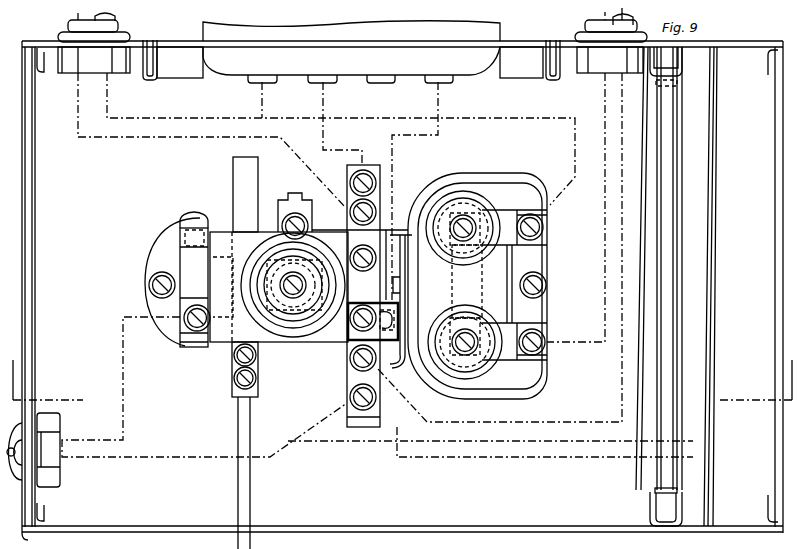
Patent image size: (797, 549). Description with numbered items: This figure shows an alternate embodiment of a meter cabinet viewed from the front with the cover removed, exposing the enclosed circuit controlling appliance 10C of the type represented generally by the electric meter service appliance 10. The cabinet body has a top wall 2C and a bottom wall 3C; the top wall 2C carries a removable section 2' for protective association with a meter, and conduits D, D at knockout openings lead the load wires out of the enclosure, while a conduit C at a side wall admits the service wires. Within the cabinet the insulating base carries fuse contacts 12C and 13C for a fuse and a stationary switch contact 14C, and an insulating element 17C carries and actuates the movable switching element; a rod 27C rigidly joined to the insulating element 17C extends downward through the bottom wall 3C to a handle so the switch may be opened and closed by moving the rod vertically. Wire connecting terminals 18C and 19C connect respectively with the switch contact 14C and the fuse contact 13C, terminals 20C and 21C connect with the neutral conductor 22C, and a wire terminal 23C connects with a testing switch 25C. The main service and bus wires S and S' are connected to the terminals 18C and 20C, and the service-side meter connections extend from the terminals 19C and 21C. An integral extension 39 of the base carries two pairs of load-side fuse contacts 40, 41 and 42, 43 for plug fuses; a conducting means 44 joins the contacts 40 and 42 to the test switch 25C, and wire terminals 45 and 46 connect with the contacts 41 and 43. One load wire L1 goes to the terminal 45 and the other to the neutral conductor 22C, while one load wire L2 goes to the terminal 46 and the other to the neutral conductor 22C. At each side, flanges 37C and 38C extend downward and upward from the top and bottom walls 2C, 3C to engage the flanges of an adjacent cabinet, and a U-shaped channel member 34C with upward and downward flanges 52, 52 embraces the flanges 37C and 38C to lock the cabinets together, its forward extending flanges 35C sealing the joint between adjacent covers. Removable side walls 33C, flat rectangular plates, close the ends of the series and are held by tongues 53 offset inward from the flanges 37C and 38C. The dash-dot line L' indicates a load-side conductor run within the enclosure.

The top wall 2C is at (43, 43).
The conduit D is at (113, 23).
The removable section 2' is at (351, 45).
The load wire L1 is at (580, 36).
The flange 52 is at (678, 63).
The flange 37C is at (22, 78).
The tongue 53 is at (43, 72).
The load wire L2 is at (164, 137).
The line conductor L' is at (499, 247).
The insulating element 17C is at (233, 163).
The wire connecting terminal 21C is at (370, 164).
The fuse contact 42 is at (462, 226).
The fuse contact 43 is at (468, 197).
The integral extension 39 is at (513, 183).
The appliance 10C is at (217, 226).
The wire connecting terminal 19C is at (303, 225).
The stationary switch contact 14C is at (180, 250).
The wire terminal 46 is at (541, 229).
The removable side wall 33C is at (32, 227).
The forward extending flange 35C is at (658, 244).
The fuse contact 12C is at (289, 293).
The wire connecting terminal 18C is at (188, 324).
The neutral conductor 22C is at (382, 301).
The testing switch 25C is at (405, 298).
The conducting means 44 is at (470, 286).
The U-shaped channel member 34C is at (663, 320).
The fuse contact 13C is at (288, 322).
The wire terminal 23C is at (347, 334).
The electric meter service appliance 10 is at (399, 365).
The fuse contact 40 is at (463, 348).
The fuse contact 41 is at (484, 373).
The wire terminal 45 is at (543, 346).
The wire connecting terminal 20C is at (348, 401).
The service wire S is at (204, 387).
The bus wire S' is at (490, 455).
The rod 27C is at (250, 513).
The bottom wall 3C is at (186, 530).
The conduit C is at (8, 483).
The flange 38C is at (21, 521).